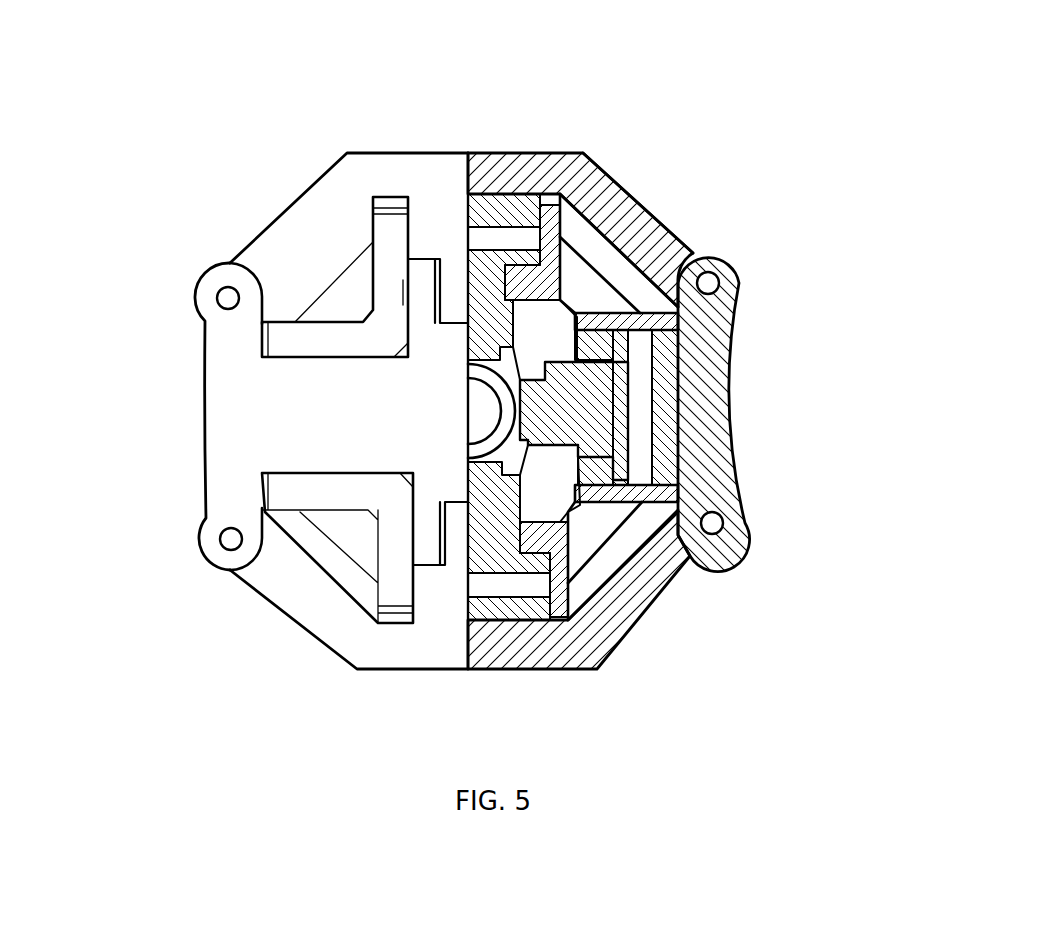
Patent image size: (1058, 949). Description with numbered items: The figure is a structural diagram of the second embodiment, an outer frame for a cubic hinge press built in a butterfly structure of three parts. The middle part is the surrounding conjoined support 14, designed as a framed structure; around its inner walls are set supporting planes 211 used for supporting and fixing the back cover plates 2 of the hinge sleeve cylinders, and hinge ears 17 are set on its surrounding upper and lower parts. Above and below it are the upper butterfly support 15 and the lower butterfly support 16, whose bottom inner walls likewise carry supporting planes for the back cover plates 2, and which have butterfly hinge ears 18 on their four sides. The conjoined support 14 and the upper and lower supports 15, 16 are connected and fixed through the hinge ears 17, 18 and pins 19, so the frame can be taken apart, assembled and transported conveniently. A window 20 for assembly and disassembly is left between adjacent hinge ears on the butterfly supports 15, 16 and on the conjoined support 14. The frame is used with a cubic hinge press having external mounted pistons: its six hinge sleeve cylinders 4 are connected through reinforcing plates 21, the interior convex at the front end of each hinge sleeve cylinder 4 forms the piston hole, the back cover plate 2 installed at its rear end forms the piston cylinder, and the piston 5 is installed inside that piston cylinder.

The back cover plate 2 is at (675, 371).
The hinge sleeve cylinder 4 is at (668, 268).
The piston 5 is at (623, 443).
The surrounding conjoined support 14 is at (312, 385).
The upper butterfly support 15 is at (418, 172).
The lower butterfly support 16 is at (423, 645).
The hinge ear 17 is at (212, 330).
The butterfly hinge ear 18 is at (268, 275).
The pin 19 is at (217, 288).
The window 20 is at (627, 277).
The reinforcing plate 21 is at (583, 290).
The supporting plane 211 is at (516, 194).